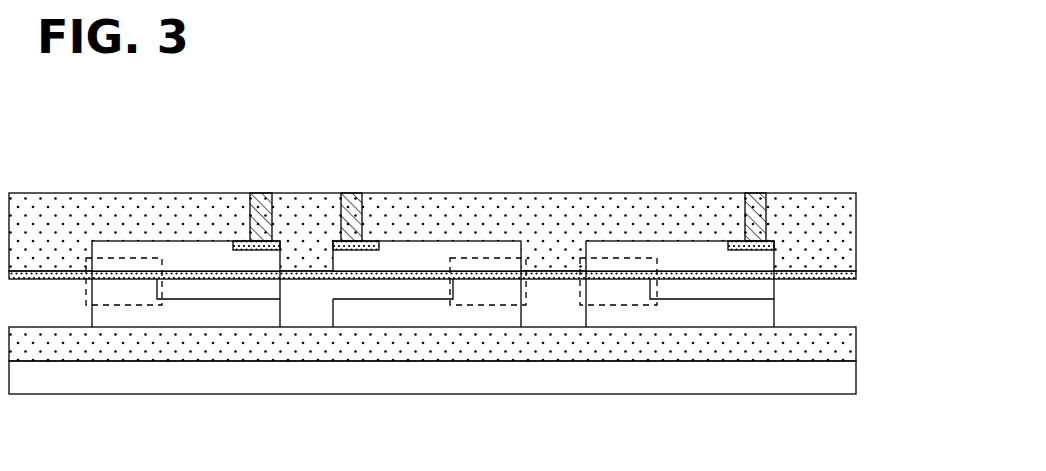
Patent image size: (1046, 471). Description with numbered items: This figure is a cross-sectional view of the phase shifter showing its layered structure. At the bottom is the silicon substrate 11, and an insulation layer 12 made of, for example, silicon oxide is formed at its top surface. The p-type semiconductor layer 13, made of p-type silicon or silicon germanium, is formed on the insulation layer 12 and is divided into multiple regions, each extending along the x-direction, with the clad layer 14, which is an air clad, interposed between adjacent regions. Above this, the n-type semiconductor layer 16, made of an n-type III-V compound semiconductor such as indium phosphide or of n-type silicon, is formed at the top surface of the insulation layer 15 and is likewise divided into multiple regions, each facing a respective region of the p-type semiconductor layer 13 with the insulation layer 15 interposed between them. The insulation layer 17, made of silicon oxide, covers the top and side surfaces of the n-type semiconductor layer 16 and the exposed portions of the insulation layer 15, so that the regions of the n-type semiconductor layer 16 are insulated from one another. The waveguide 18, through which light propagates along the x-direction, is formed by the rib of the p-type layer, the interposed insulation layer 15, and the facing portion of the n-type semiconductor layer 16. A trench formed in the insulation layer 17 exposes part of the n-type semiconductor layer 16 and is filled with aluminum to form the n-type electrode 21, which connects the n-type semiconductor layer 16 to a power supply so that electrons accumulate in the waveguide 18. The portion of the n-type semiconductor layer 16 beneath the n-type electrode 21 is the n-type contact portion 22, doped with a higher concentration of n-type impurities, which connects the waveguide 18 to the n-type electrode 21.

The substrate 11 is at (845, 380).
The insulation layer 12 is at (845, 335).
The p-type semiconductor layer 13 is at (693, 310).
The clad layer 14 is at (560, 290).
The insulation layer 15 is at (848, 276).
The n-type semiconductor layer 16 is at (667, 247).
The insulation layer 17 is at (848, 225).
The waveguide 18 is at (608, 243).
The n-type electrode 21 is at (753, 206).
The n-type contact portion 22 is at (772, 243).